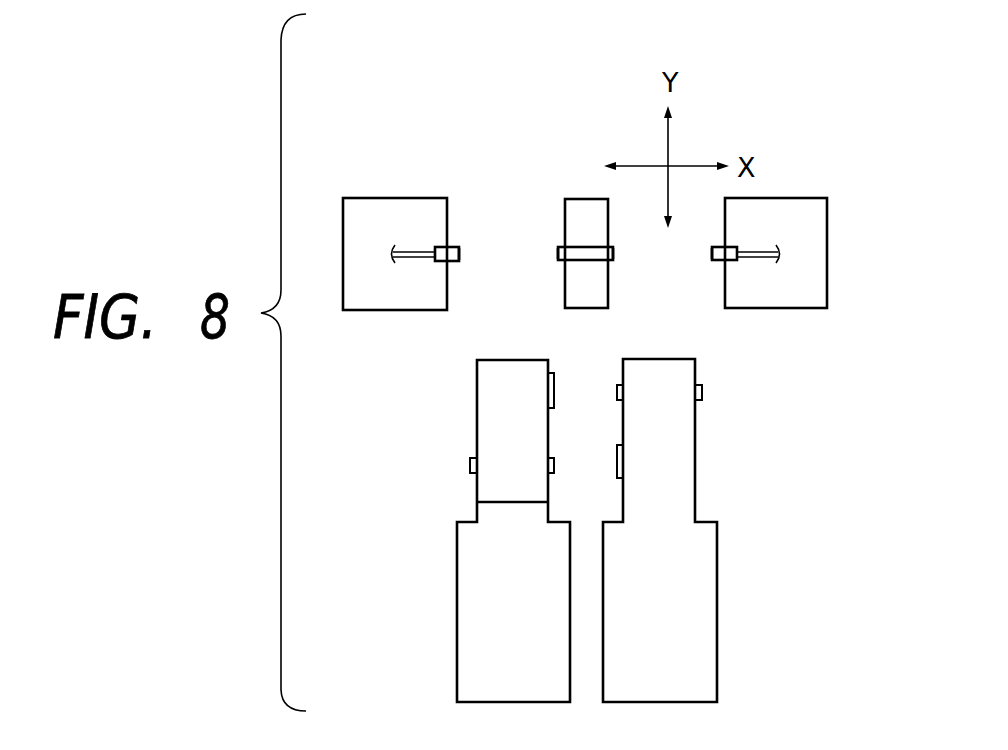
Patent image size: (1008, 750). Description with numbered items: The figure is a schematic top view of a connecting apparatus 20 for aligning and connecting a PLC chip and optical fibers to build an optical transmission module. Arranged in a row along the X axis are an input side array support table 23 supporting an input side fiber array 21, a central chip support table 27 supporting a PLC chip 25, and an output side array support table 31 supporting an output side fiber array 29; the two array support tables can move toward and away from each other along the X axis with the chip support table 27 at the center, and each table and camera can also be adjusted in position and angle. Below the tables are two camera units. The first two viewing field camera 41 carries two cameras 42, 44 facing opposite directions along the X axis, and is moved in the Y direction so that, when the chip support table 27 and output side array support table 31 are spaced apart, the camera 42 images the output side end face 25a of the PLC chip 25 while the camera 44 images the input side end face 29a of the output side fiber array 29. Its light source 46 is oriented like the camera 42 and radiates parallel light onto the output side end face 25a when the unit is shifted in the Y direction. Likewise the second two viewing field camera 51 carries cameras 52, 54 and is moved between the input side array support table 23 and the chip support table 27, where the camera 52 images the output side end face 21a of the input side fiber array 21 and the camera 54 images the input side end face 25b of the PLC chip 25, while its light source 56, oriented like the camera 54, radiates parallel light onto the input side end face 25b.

The connecting apparatus 20 is at (775, 102).
The input side fiber array 21 is at (452, 247).
The output side end face 21a is at (460, 254).
The input side array support table 23 is at (403, 210).
The PLC chip 25 is at (558, 248).
The output side end face 25a is at (614, 256).
The input side end face 25b is at (557, 262).
The chip support table 27 is at (587, 208).
The output side fiber array 29 is at (733, 247).
The input side end face 29a is at (703, 262).
The output side array support table 31 is at (810, 207).
The first two viewing field camera 41 is at (700, 625).
The camera 42 is at (617, 390).
The camera 44 is at (702, 392).
The light source 46 is at (616, 460).
The second two viewing field camera 51 is at (473, 630).
The camera 52 is at (470, 470).
The camera 54 is at (555, 470).
The light source 56 is at (555, 392).